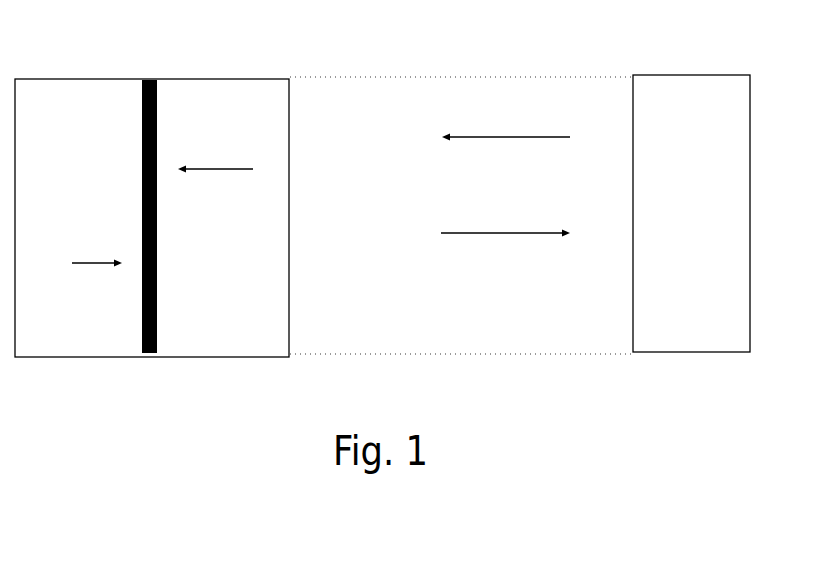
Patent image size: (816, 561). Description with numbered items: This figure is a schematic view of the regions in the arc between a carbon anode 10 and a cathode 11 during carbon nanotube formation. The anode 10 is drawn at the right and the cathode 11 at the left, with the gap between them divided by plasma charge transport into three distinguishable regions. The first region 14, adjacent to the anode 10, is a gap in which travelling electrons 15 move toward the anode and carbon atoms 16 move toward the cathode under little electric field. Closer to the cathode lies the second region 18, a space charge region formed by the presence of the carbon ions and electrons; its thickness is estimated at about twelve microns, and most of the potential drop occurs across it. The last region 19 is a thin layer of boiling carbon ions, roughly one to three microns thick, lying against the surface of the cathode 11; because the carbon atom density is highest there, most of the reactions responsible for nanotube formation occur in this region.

The carbon anode 10 is at (688, 70).
The cathode 11 is at (83, 73).
The first region 14 is at (488, 73).
The electrons 15 is at (527, 226).
The carbon atoms 16 is at (528, 133).
The second region 18 is at (243, 67).
The last region 19 is at (161, 78).